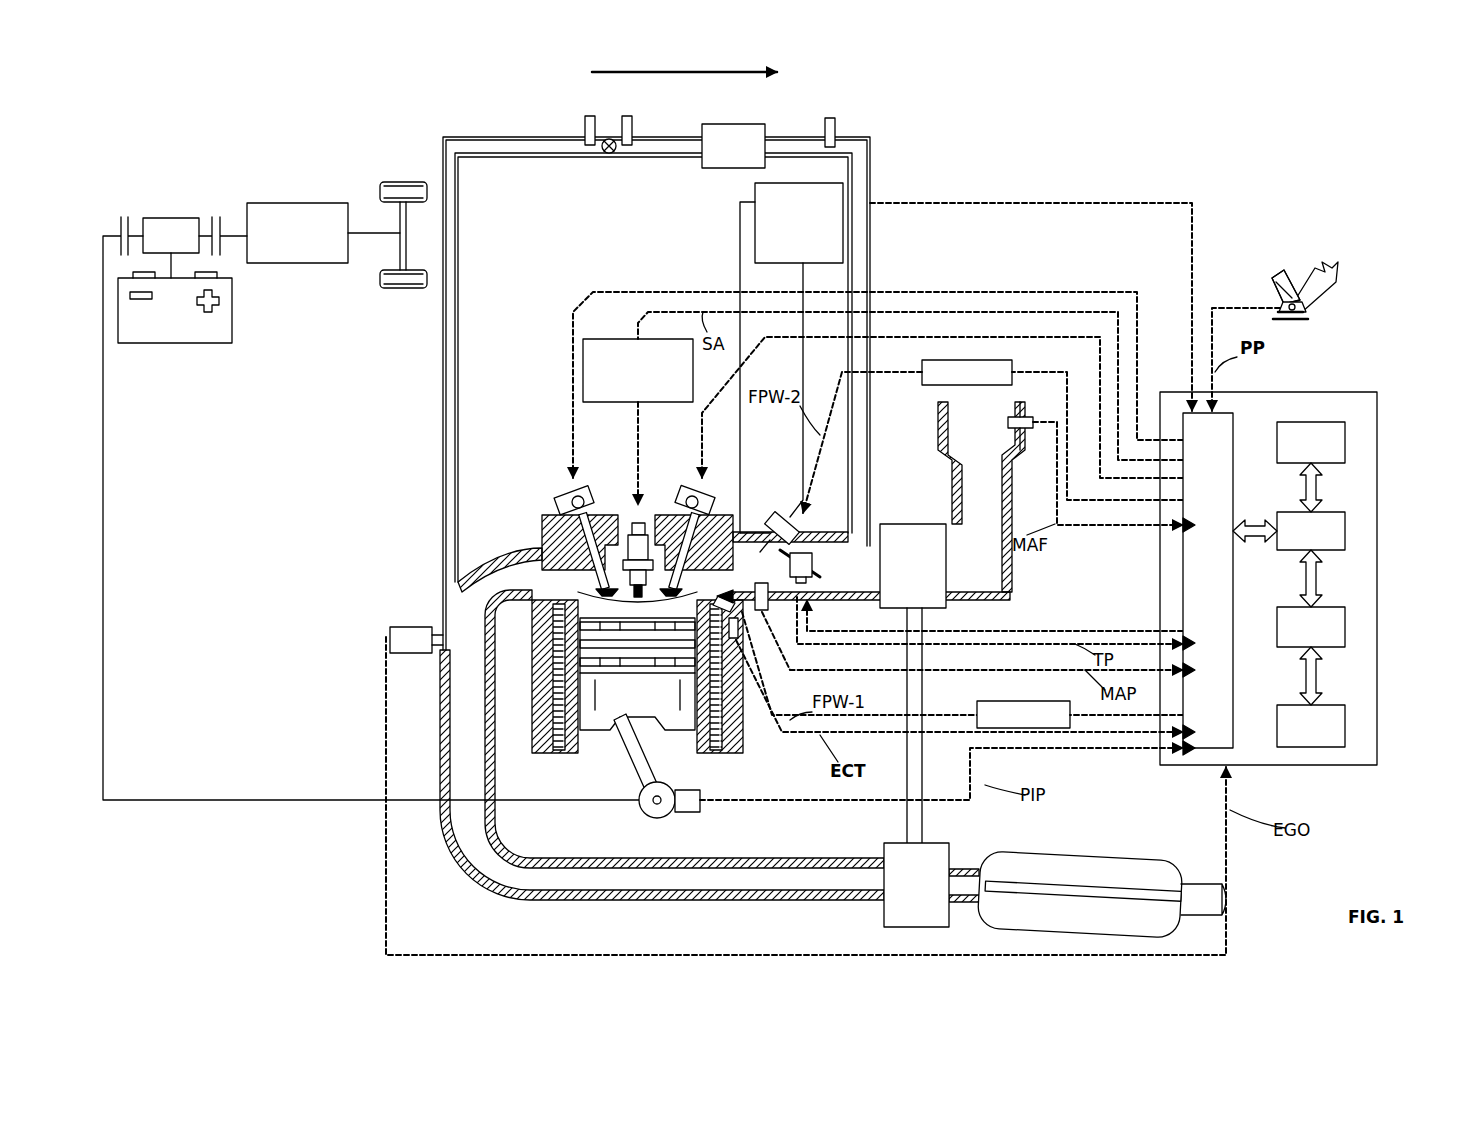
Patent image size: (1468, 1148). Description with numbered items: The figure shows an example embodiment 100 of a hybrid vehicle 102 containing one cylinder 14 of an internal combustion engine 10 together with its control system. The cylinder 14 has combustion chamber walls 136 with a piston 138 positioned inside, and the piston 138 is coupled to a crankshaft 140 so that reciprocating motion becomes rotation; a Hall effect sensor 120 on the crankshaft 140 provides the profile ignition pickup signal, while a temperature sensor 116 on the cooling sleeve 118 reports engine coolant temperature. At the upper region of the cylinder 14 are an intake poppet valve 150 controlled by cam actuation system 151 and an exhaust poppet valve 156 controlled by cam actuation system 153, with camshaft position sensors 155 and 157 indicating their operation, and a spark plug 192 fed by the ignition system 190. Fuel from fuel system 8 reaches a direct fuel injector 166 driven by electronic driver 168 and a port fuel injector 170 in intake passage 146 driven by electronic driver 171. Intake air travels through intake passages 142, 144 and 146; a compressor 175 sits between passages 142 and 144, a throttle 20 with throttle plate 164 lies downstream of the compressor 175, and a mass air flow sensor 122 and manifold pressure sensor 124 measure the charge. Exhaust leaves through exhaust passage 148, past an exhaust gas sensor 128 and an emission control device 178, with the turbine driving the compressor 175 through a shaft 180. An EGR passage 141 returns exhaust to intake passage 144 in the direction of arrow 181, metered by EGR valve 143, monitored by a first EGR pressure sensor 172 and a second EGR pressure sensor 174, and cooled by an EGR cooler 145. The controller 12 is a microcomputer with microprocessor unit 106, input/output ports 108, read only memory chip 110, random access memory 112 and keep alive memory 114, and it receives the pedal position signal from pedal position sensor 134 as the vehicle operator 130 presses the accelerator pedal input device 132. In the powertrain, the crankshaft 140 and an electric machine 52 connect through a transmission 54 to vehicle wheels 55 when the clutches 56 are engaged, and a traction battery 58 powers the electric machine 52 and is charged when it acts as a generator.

The example embodiment 100 is at (1297, 100).
The hybrid vehicle 102 is at (415, 137).
The internal combustion engine 10 is at (578, 243).
The fuel system 8 is at (799, 350).
The controller 12 is at (1377, 392).
The cylinder 14 is at (537, 630).
The throttle 20 is at (805, 552).
The electric machine 52 is at (178, 218).
The transmission 54 is at (325, 263).
The vehicle wheels 55 is at (398, 288).
The clutch 56 is at (121, 225).
The traction battery 58 is at (175, 343).
The microprocessor unit 106 is at (1345, 530).
The input/output ports 108 is at (1233, 415).
The read only memory chip 110 is at (1345, 440).
The random access memory 112 is at (1345, 627).
The keep alive memory 114 is at (1345, 725).
The temperature sensor 116 is at (740, 640).
The cooling sleeve 118 is at (720, 740).
The Hall effect sensor 120 is at (695, 812).
The mass air flow sensor 122 is at (1028, 417).
The manifold pressure sensor 124 is at (768, 612).
The exhaust gas sensor 128 is at (390, 637).
The vehicle operator 130 is at (1323, 280).
The input device 132 is at (1275, 290).
The pedal position sensor 134 is at (1308, 310).
The combustion chamber walls 136 is at (578, 750).
The piston 138 is at (620, 720).
The crankshaft 140 is at (645, 812).
The EGR passage 141 is at (870, 265).
The intake air passage 142 is at (981, 497).
The EGR valve 143 is at (615, 152).
The intake air passage 144 is at (870, 577).
The EGR cooler 145 is at (735, 124).
The intake air passage 146 is at (790, 553).
The exhaust passage 148 is at (500, 570).
The intake poppet valve 150 is at (640, 545).
The cam actuation system 151 is at (690, 490).
The cam actuation system 153 is at (582, 490).
The camshaft position sensor 155 is at (735, 515).
The exhaust poppet valve 156 is at (548, 518).
The camshaft position sensor 157 is at (570, 498).
The throttle plate 164 is at (745, 533).
The fuel injector 166 is at (715, 596).
The electronic driver 168 is at (977, 708).
The fuel injector 170 is at (785, 515).
The electronic driver 171 is at (922, 370).
The first EGR pressure sensor 172 is at (587, 116).
The second EGR pressure sensor 174 is at (628, 116).
The compressor 175 is at (893, 524).
The emission control device 178 is at (1150, 860).
The shaft 180 is at (925, 822).
The arrow 181 is at (712, 72).
The ignition system 190 is at (605, 339).
The spark plug 192 is at (636, 523).